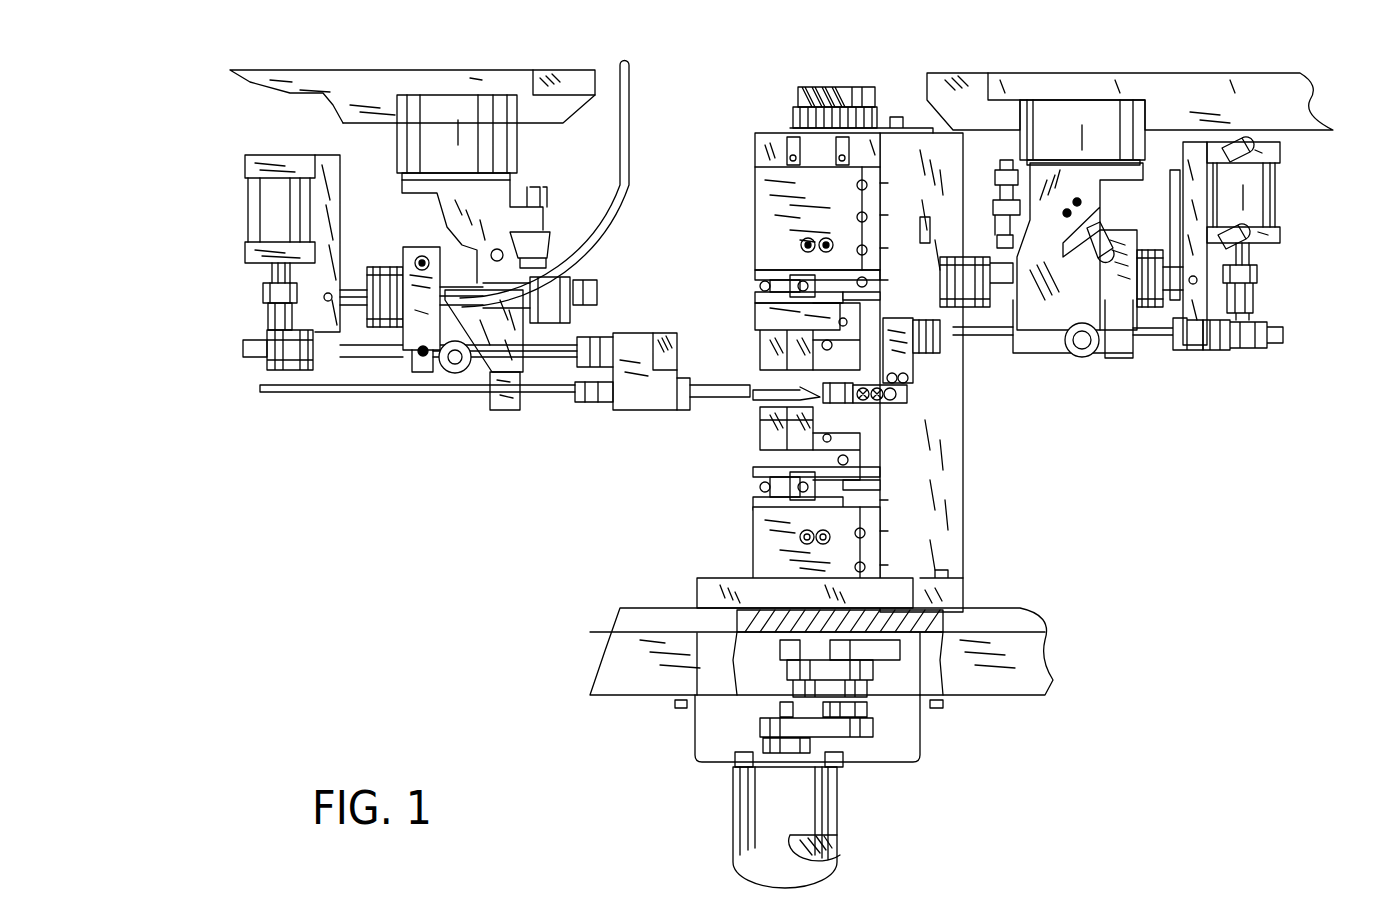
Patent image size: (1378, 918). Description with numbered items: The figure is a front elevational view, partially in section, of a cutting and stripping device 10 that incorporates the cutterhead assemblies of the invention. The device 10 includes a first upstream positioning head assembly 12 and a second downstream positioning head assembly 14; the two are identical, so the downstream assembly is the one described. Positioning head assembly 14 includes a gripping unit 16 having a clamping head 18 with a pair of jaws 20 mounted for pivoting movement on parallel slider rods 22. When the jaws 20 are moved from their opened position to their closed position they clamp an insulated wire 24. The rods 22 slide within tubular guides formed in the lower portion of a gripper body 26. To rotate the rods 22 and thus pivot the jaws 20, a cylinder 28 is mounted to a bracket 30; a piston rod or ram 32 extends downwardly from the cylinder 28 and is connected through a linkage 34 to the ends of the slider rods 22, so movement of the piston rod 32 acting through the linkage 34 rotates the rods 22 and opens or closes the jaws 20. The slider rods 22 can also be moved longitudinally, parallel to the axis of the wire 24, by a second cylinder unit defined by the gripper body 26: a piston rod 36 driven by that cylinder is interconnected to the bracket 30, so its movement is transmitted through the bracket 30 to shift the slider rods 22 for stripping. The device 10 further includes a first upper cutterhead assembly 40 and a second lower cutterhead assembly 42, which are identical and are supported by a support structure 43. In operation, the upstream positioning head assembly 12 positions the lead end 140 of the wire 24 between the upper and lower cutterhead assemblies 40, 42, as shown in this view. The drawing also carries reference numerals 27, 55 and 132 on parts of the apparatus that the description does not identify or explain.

The cutting and stripping device 10 is at (1138, 400).
The first upstream positioning head assembly 12 is at (331, 418).
The second downstream positioning head assembly 14 is at (1248, 365).
The gripping unit 16 is at (934, 385).
The clamping head 18 is at (645, 326).
The jaws 20 is at (677, 405).
The slider rods 22 is at (380, 353).
The insulated wire 24 is at (793, 323).
The gripper body 26 is at (453, 250).
The air cylinder 27 is at (258, 208).
The cylinder 28 is at (1268, 200).
The bracket 30 is at (1197, 153).
The piston rod 32 is at (268, 277).
The linkage 34 is at (1257, 297).
The piston rod 36 is at (352, 283).
The first upper cutterhead assembly 40 is at (740, 274).
The second lower cutterhead assembly 42 is at (744, 500).
The support structure 43 is at (621, 596).
The jaw bar 55 is at (853, 297).
The drive cylinder 132 is at (760, 843).
The lead end 140 is at (775, 393).